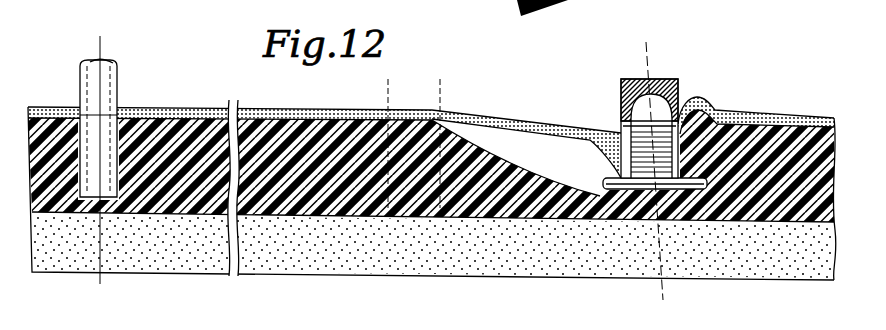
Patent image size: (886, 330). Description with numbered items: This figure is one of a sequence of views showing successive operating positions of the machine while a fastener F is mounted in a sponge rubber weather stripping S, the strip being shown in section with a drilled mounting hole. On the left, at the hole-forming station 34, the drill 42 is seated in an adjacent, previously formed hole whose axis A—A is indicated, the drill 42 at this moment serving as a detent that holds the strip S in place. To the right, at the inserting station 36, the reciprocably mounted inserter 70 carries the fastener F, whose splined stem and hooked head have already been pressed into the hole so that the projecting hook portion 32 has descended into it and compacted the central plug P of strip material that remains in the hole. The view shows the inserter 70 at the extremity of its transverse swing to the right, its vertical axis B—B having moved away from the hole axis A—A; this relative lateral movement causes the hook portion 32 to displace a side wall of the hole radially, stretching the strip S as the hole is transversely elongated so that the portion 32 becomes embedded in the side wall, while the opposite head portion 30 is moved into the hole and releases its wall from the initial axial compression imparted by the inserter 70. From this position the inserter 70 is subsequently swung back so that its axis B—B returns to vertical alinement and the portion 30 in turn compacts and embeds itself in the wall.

The hole-forming station 34 is at (137, 99).
The drill 42 is at (119, 84).
The inserting station 36 is at (673, 113).
The inserter 70 is at (663, 78).
The hook portion 30 is at (603, 180).
The hook portion 32 is at (758, 122).
The central plug P is at (572, 180).
The fastener F is at (645, 133).
The weather stripping S is at (241, 107).
The hole axis A is at (99, 49).
The inserter axis B is at (646, 57).